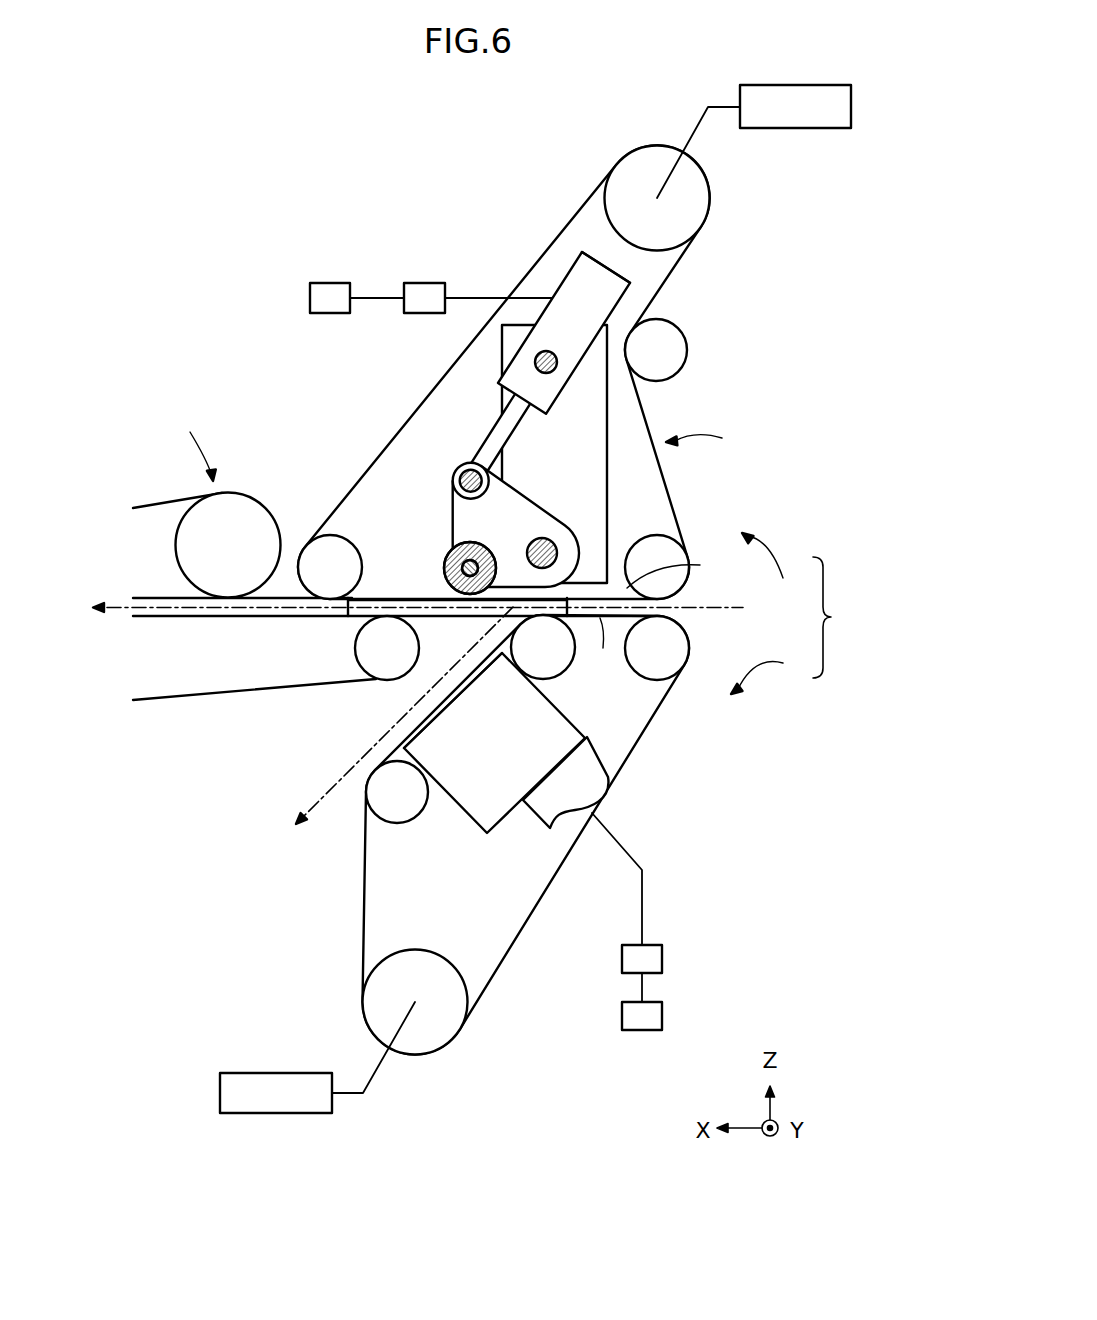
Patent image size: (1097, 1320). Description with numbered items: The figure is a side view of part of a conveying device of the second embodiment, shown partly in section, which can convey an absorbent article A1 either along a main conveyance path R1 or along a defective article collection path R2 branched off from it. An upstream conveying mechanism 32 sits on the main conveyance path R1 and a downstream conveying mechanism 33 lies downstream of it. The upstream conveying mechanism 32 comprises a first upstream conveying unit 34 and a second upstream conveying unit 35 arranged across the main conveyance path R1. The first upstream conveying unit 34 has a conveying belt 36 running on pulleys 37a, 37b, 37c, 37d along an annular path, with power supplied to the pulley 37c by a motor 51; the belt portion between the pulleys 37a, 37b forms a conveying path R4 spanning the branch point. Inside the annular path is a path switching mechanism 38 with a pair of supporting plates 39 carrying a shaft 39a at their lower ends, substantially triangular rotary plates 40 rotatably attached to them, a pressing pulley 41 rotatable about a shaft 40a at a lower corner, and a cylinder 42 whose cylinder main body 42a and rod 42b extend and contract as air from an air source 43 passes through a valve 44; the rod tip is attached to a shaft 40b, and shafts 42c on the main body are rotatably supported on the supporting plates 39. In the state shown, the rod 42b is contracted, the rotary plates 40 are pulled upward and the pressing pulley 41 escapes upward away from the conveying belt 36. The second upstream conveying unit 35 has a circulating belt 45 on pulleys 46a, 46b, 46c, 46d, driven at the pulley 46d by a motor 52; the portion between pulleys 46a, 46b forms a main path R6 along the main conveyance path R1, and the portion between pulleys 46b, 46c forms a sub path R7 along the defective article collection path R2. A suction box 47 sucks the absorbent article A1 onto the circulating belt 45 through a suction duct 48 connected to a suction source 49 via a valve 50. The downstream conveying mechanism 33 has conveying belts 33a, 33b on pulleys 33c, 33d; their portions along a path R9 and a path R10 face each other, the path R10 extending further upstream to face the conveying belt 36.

The upstream conveying mechanism 32 is at (836, 617).
The downstream conveying mechanism 33 is at (191, 439).
The conveying belt 33a is at (147, 507).
The conveying belt 33b is at (180, 697).
The pulley 33c is at (250, 498).
The pulley 33d is at (355, 647).
The first upstream conveying unit 34 is at (776, 560).
The second upstream conveying unit 35 is at (771, 671).
The conveying belt 36 is at (416, 412).
The pulley 37a is at (650, 535).
The pulley 37b is at (352, 543).
The pulley 37c is at (710, 200).
The pulley 37d is at (687, 350).
The path switching mechanism 38 is at (709, 438).
The supporting plate 39 is at (607, 398).
The shaft 39a is at (548, 539).
The rotary plate 40 is at (512, 497).
The shaft 40a is at (477, 560).
The shaft 40b is at (452, 481).
The pressing pulley 41 is at (444, 566).
The cylinder 42 is at (645, 293).
The cylinder main body 42a is at (577, 257).
The rod 42b is at (493, 430).
The shaft 42c is at (553, 370).
The air source 43 is at (328, 283).
The valve 44 is at (425, 283).
The circulating belt 45 is at (517, 932).
The pulley 46a is at (634, 670).
The pulley 46b is at (572, 660).
The pulley 46c is at (412, 823).
The pulley 46d is at (407, 950).
The suction box 47 is at (508, 812).
The suction duct 48 is at (588, 770).
The suction source 49 is at (662, 1015).
The valve 50 is at (662, 959).
The motor 51 is at (822, 85).
The motor 52 is at (295, 1073).
The main conveyance path R1 is at (113, 603).
The defective article collection path R2 is at (342, 777).
The conveying path R4 is at (678, 569).
The main path R6 is at (604, 644).
The sub path R7 is at (462, 693).
The path R9 is at (160, 597).
The path R10 is at (160, 620).
The absorbent article A1 is at (452, 618).